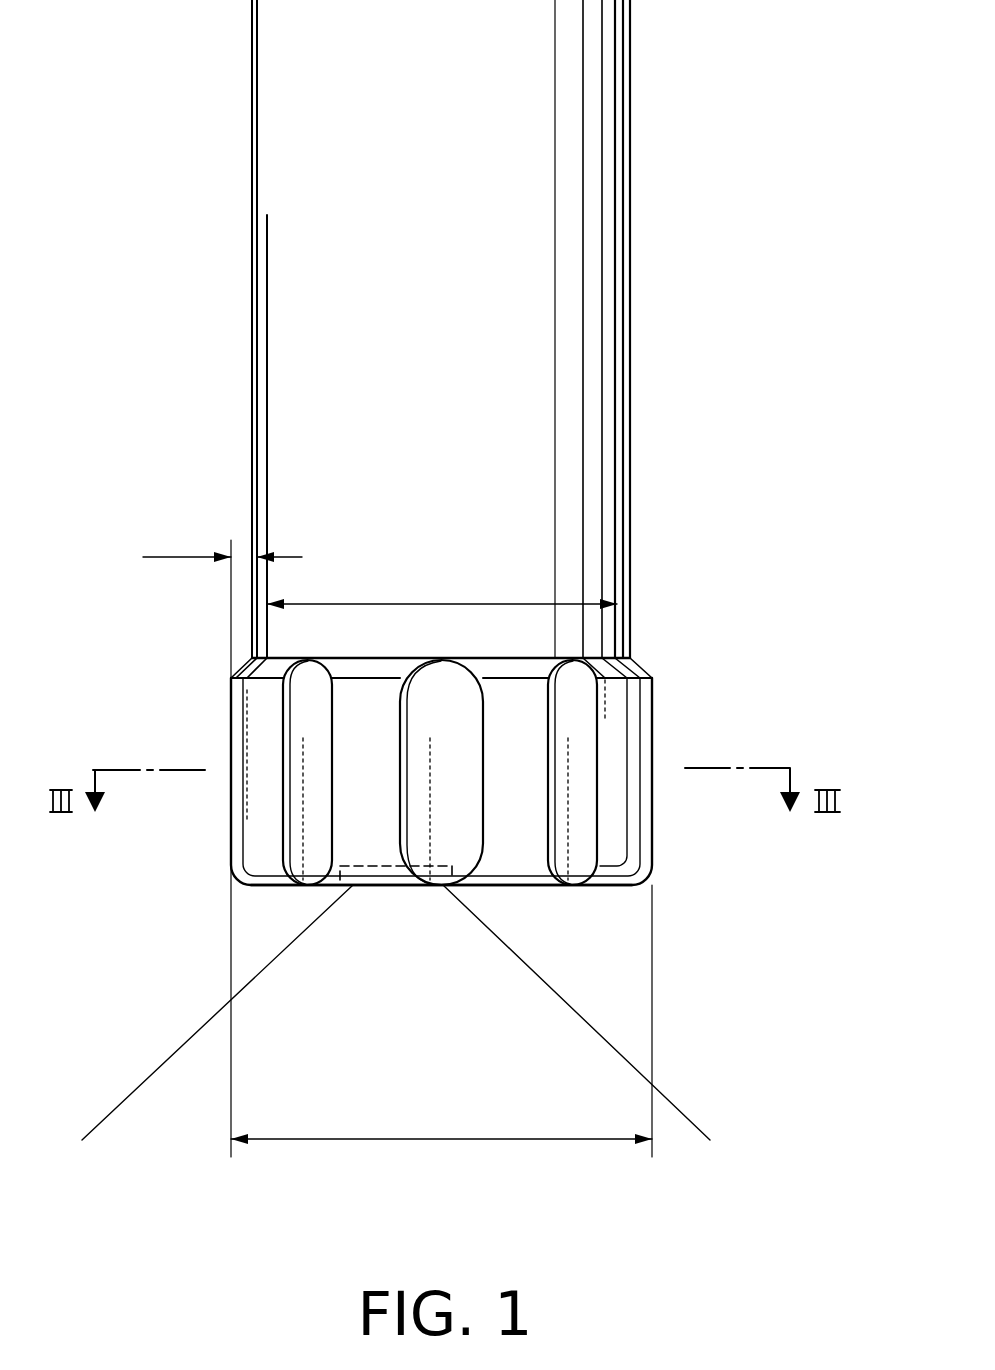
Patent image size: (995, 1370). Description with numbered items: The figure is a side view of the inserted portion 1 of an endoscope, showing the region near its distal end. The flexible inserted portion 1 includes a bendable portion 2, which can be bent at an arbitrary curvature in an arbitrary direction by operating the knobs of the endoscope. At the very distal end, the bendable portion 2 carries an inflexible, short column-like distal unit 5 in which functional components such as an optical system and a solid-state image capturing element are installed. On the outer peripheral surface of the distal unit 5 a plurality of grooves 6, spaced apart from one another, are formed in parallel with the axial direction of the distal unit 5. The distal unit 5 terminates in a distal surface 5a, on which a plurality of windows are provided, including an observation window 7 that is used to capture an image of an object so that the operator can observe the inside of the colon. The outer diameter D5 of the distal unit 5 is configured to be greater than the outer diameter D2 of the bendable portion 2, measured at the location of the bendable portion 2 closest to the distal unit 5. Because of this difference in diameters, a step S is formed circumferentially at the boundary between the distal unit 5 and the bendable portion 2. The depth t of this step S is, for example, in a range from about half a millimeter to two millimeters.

The inserted portion 1 is at (441, 481).
The bendable portion 2 is at (268, 386).
The distal unit 5 is at (440, 811).
The distal surface 5a is at (523, 886).
The grooves 6 is at (448, 719).
The observation window 7 is at (392, 886).
The step S is at (642, 670).
The depth of the step t is at (222, 543).
The outer diameter of the bendable portion D2 is at (442, 587).
The outer diameter of the distal unit D5 is at (441, 848).